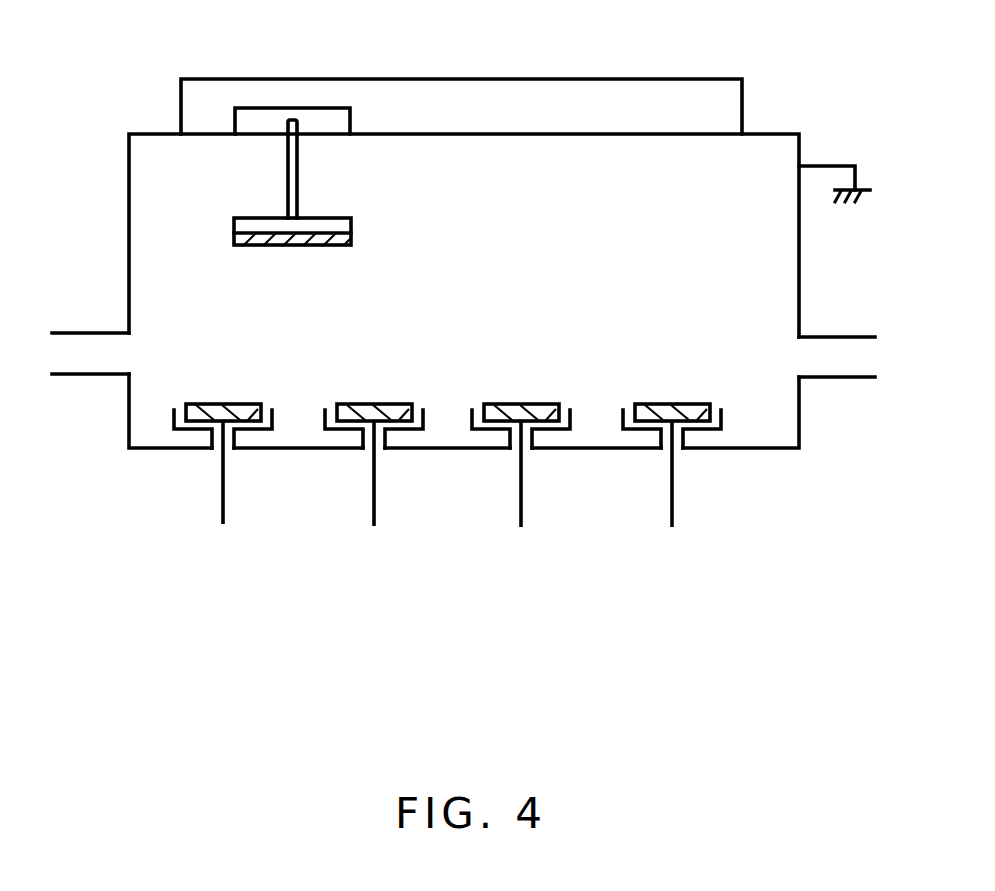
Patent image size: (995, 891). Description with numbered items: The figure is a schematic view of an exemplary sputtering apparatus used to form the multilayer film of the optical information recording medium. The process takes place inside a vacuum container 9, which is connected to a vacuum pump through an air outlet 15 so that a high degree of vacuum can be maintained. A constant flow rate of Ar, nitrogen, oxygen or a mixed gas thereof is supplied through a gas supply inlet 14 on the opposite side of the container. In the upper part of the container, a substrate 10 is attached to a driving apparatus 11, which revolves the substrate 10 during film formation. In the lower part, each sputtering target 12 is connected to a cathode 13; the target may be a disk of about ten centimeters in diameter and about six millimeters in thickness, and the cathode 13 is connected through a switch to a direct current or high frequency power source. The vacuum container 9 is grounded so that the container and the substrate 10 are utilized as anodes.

The vacuum container 9 is at (772, 134).
The substrate 10 is at (351, 233).
The driving apparatus 11 is at (330, 120).
The sputtering target 12 is at (353, 407).
The cathode 13 is at (223, 477).
The gas supply inlet 14 is at (82, 345).
The air outlet 15 is at (837, 353).